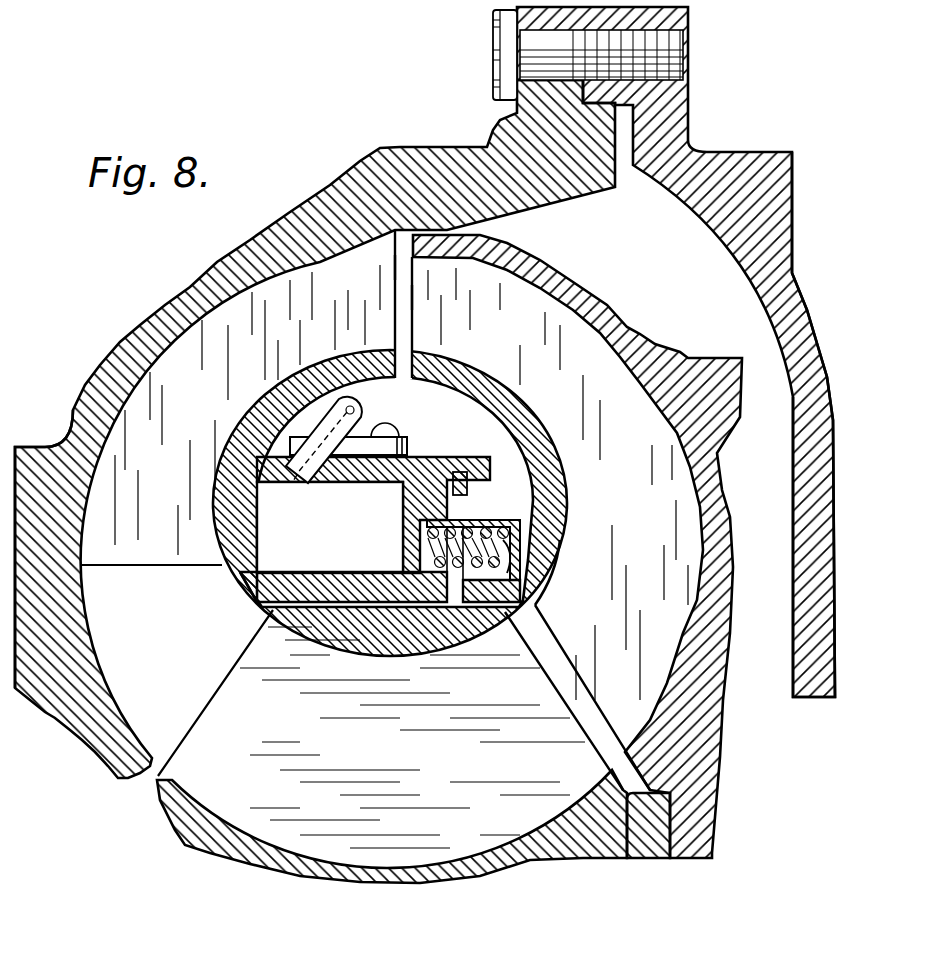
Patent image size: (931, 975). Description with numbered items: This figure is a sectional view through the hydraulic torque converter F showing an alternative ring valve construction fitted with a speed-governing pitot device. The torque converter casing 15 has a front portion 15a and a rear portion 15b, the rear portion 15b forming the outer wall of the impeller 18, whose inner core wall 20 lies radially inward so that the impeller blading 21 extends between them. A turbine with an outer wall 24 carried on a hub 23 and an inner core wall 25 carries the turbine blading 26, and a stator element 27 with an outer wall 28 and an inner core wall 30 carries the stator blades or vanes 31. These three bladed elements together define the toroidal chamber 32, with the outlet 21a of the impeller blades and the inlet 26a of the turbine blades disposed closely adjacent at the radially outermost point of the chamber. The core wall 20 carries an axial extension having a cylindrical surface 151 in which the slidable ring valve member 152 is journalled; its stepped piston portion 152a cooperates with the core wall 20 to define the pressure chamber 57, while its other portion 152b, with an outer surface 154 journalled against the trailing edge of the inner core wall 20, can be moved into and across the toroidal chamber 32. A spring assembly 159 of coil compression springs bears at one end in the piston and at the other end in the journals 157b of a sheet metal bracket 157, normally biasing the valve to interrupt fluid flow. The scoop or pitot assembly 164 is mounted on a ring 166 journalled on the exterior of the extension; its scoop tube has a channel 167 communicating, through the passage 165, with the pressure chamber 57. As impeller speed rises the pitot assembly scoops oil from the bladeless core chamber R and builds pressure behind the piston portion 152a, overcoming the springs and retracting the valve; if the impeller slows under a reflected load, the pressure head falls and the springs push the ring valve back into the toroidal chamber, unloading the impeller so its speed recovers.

The hydraulic torque converter F is at (179, 274).
The torque converter casing 15 is at (720, 137).
The front portion 15a is at (780, 187).
The rear portion 15b is at (100, 362).
The impeller 18 is at (421, 346).
The inner core wall 20 is at (225, 447).
The impeller blading 21 is at (198, 379).
The outlet of the impeller blades 21a is at (398, 262).
The hub 23 is at (650, 858).
The outer wall 24 is at (630, 318).
The inner core wall 25 is at (533, 580).
The turbine blading 26 is at (624, 473).
The inlet of the turbine blades 26a is at (404, 301).
The stator element 27 is at (575, 698).
The outer wall 28 is at (398, 880).
The inner core wall 30 is at (360, 635).
The stator blades or vanes 31 is at (370, 768).
The toroidal chamber 32 is at (590, 727).
The pressure chamber 57 is at (362, 556).
The cylindrical surface 151 is at (375, 486).
The ring valve member 152 is at (327, 592).
The piston portion 152a is at (465, 472).
The valve member portion 152b is at (245, 590).
The outer surface 154 is at (278, 578).
The sheet metal bracket 157 is at (520, 528).
The journals 157b is at (511, 542).
The spring assembly 159 is at (470, 588).
The scoop or pitot assembly 164 is at (360, 389).
The passage 165 is at (295, 487).
The ring 166 is at (409, 447).
The channel 167 is at (365, 415).
The inner chamber R is at (206, 501).